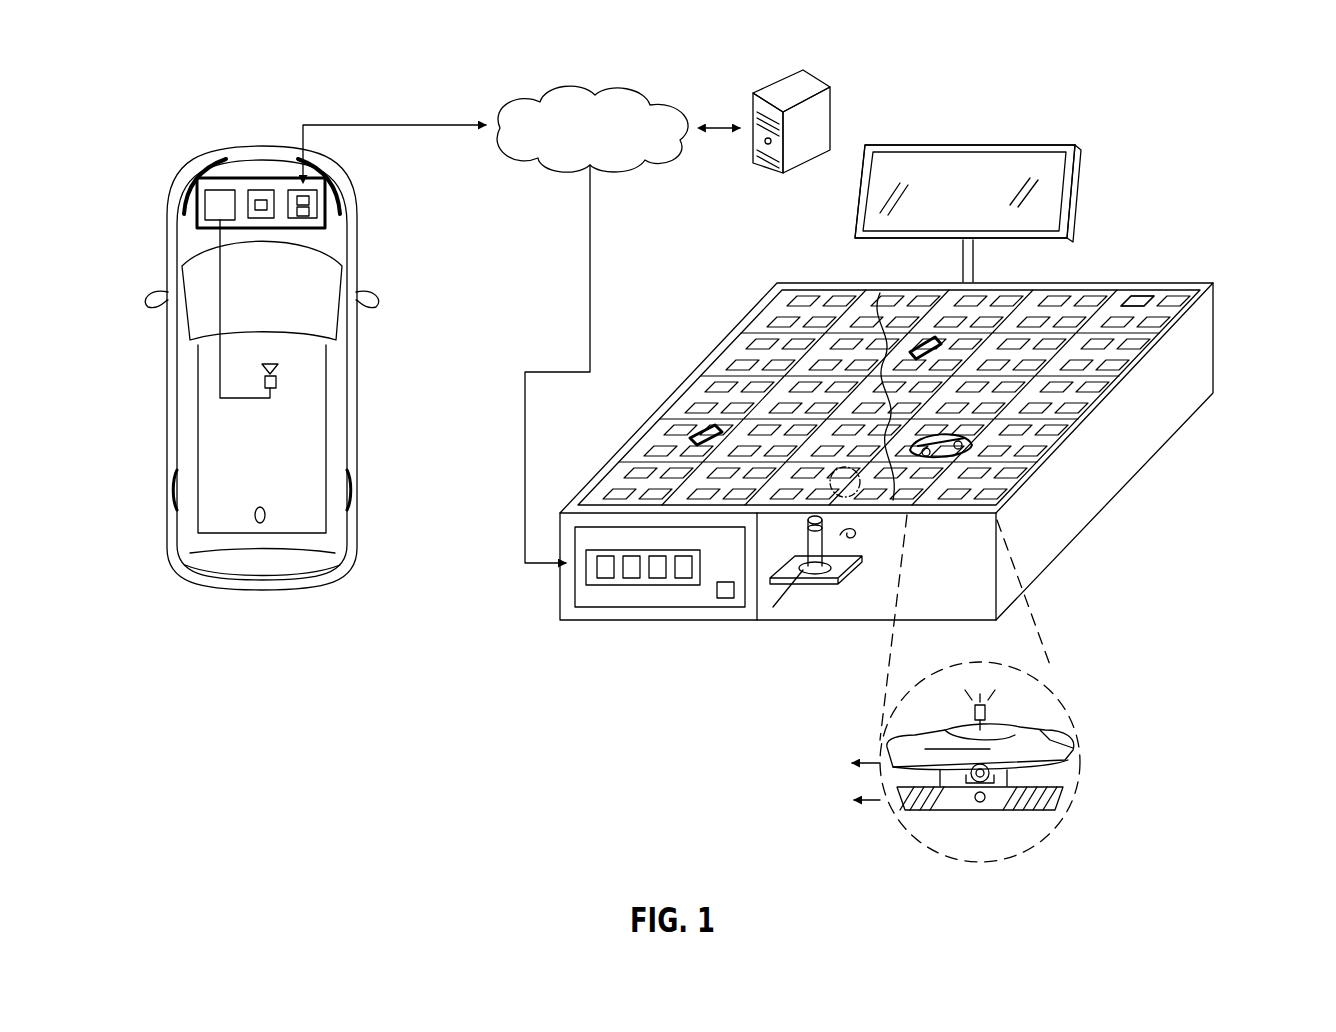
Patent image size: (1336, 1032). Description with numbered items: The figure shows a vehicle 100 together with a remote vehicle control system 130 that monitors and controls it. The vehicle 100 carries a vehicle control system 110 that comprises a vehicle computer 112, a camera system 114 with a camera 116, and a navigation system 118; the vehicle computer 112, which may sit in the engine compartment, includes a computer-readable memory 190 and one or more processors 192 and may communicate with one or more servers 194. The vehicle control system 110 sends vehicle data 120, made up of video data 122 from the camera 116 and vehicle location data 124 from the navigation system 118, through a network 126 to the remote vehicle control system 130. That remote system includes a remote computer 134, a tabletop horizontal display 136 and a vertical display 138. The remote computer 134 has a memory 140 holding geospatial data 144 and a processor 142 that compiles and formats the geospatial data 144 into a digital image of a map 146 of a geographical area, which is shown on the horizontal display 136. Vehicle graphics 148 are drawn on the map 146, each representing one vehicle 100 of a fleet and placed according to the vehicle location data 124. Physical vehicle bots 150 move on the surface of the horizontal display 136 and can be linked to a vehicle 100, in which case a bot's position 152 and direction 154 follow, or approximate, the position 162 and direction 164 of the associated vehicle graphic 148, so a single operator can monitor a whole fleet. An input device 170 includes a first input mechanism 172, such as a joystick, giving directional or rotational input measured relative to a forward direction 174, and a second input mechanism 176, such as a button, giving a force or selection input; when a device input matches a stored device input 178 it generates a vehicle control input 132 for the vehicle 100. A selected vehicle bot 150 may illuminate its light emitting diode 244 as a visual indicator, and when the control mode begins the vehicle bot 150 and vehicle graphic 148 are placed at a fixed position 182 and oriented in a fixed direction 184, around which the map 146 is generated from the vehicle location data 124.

The vehicle 100 is at (303, 605).
The vehicle control system 110 is at (227, 150).
The vehicle computer 112 is at (306, 221).
The camera system 114 is at (206, 206).
The camera 116 is at (279, 380).
The navigation (NAV) system 118 is at (253, 188).
The vehicle data 120 is at (437, 125).
The video data 122 is at (242, 400).
The vehicle location data 124 is at (262, 220).
The network 126 is at (612, 144).
The remote vehicle control system 130 is at (528, 601).
The vehicle control input 132 is at (592, 240).
The remote computer 134 is at (582, 612).
The horizontal display 136 is at (1098, 295).
The vertical display 138 is at (1080, 172).
The memory 140 is at (613, 587).
The processor 142 is at (733, 607).
The geospatial data 144 is at (590, 563).
The map 146 is at (1141, 304).
The vehicle graphic 148 is at (697, 440).
The vehicle bot 150 is at (945, 430).
The position 152 is at (975, 803).
The direction 154 is at (848, 766).
The position 162 is at (988, 785).
The direction 164 is at (854, 802).
The input device 170 is at (838, 600).
The first input mechanism 172 is at (846, 553).
The forward direction 174 is at (797, 598).
The second input mechanism 176 is at (858, 533).
The stored device input 178 is at (633, 587).
The fixed position 182 is at (830, 481).
The fixed direction 184 is at (840, 458).
The computer-readable memory 190 is at (312, 198).
The processor 192 is at (313, 210).
The server 194 is at (828, 54).
The light emitting diode (LED) 244 is at (981, 700).